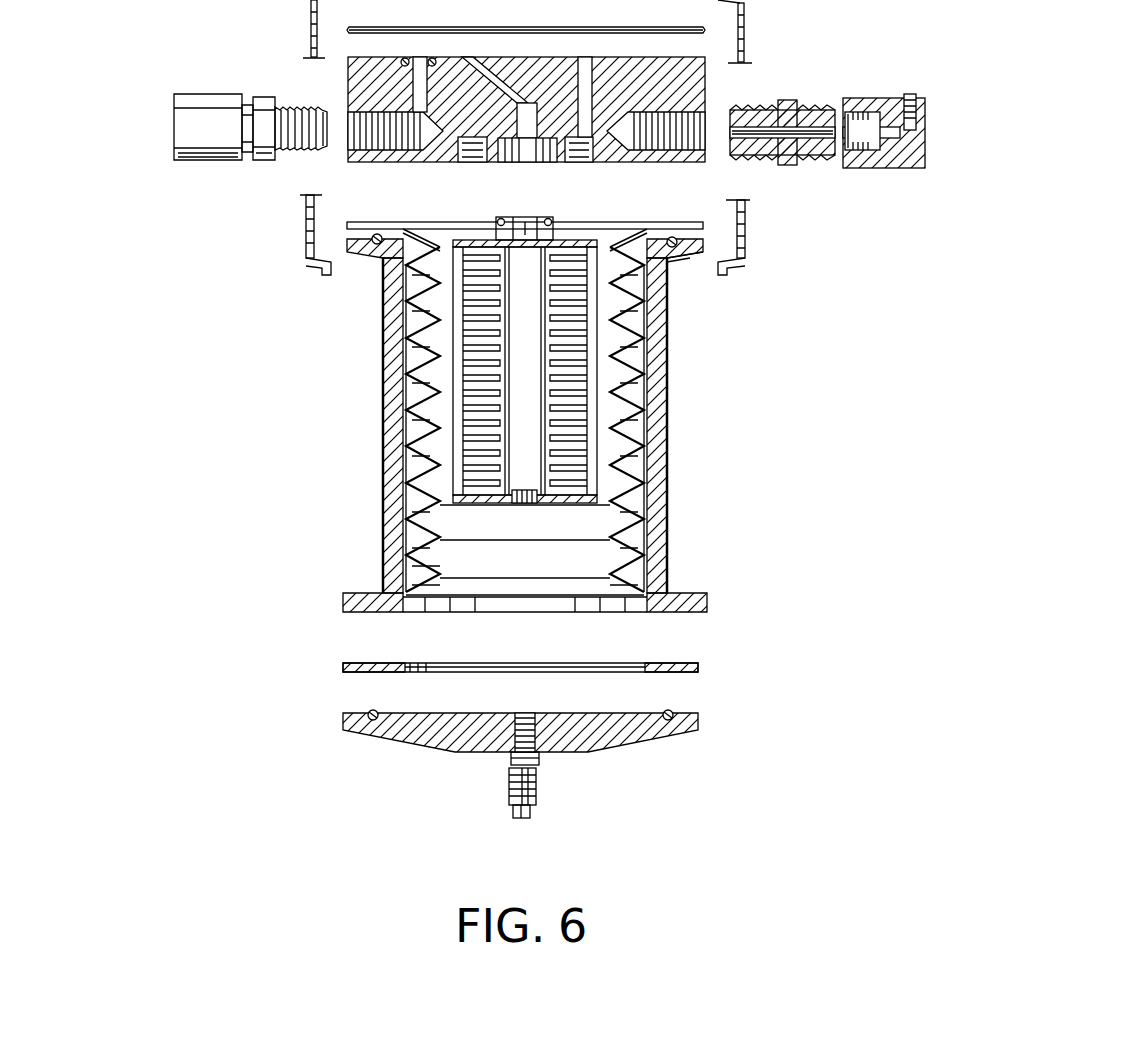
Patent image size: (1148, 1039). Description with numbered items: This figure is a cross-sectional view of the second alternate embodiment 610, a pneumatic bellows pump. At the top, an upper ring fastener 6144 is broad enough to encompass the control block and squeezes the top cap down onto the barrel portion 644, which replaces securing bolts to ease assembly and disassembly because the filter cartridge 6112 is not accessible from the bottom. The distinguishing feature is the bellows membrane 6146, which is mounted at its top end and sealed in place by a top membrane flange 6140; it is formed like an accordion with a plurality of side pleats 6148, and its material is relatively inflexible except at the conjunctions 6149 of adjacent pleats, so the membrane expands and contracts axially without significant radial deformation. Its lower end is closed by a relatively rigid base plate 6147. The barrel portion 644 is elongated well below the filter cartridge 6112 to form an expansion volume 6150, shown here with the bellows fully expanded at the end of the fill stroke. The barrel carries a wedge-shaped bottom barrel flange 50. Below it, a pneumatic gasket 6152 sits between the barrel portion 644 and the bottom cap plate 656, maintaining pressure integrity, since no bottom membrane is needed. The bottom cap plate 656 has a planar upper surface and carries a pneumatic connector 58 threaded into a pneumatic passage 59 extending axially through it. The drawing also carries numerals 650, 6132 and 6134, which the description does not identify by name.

The upper ring fastener 6144 is at (311, 53).
The top membrane flange 6140 is at (396, 222).
The screw 6134 is at (670, 238).
The top flange 650 is at (380, 258).
The flange shoulder 6132 is at (670, 262).
The bellows membrane 6146 is at (642, 357).
The barrel portion 644 is at (666, 410).
The filter cartridge 6112 is at (453, 415).
The second alternate embodiment 610 is at (779, 403).
The expansion volume 6150 is at (516, 534).
The side pleats 6148 is at (610, 522).
The conjunctions of adjacent side pleats 6149 is at (438, 543).
The base plate 6147 is at (562, 596).
The bottom barrel flange 50 is at (703, 596).
The pneumatic gasket 6152 is at (699, 663).
The pneumatic passage 59 is at (525, 712).
The pneumatic connector 58 is at (508, 785).
The bottom cap plate 656 is at (572, 745).